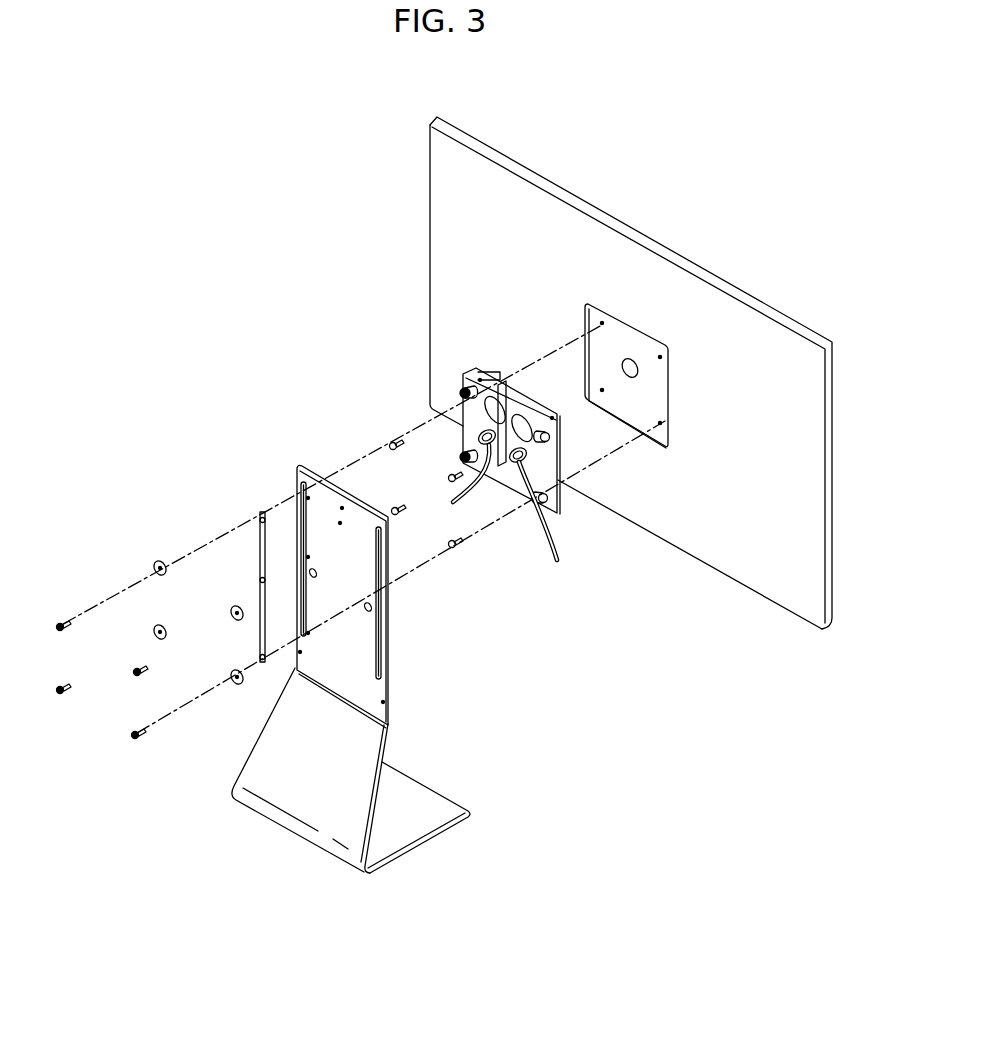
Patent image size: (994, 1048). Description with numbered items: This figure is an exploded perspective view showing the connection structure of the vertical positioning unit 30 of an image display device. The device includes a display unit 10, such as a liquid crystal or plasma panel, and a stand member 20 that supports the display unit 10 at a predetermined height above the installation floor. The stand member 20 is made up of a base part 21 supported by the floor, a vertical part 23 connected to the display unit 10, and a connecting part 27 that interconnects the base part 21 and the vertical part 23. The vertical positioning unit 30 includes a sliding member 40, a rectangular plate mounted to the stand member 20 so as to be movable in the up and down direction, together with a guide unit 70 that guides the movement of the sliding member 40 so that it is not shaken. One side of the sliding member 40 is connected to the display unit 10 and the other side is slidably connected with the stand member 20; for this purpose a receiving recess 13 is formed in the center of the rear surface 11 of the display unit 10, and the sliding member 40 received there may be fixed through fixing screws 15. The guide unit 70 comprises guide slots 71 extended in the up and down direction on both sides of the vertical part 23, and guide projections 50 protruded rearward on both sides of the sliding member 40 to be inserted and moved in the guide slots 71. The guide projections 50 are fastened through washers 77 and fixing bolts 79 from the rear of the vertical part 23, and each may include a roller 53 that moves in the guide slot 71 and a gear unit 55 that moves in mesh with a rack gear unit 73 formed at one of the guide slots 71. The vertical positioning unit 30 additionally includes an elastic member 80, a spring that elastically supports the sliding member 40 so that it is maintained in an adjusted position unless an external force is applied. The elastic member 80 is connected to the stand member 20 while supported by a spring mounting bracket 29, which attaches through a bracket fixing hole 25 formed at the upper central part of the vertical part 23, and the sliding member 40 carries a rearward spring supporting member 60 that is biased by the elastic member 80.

The display unit 10 is at (539, 158).
The rear surface 11 is at (773, 578).
The receiving recess 13 is at (641, 345).
The fixing screws 15 is at (390, 446).
The stand member 20 is at (347, 657).
The base part 21 is at (407, 832).
The vertical part 23 is at (326, 495).
The bracket fixing hole 25 is at (341, 523).
The connecting part 27 is at (268, 737).
The spring mounting bracket 29 is at (497, 387).
The vertical positioning unit 30 is at (514, 477).
The sliding member 40 is at (547, 462).
The guide projections 50 is at (462, 393).
The roller 53 is at (540, 510).
The gear unit 55 is at (460, 458).
The spring supporting member 60 is at (478, 433).
The guide unit 70 is at (552, 437).
The guide slots 71 is at (296, 491).
The rack gear unit 73 is at (262, 582).
The washers 77 is at (160, 565).
The fixing bolts 79 is at (60, 626).
The elastic member 80 is at (541, 535).